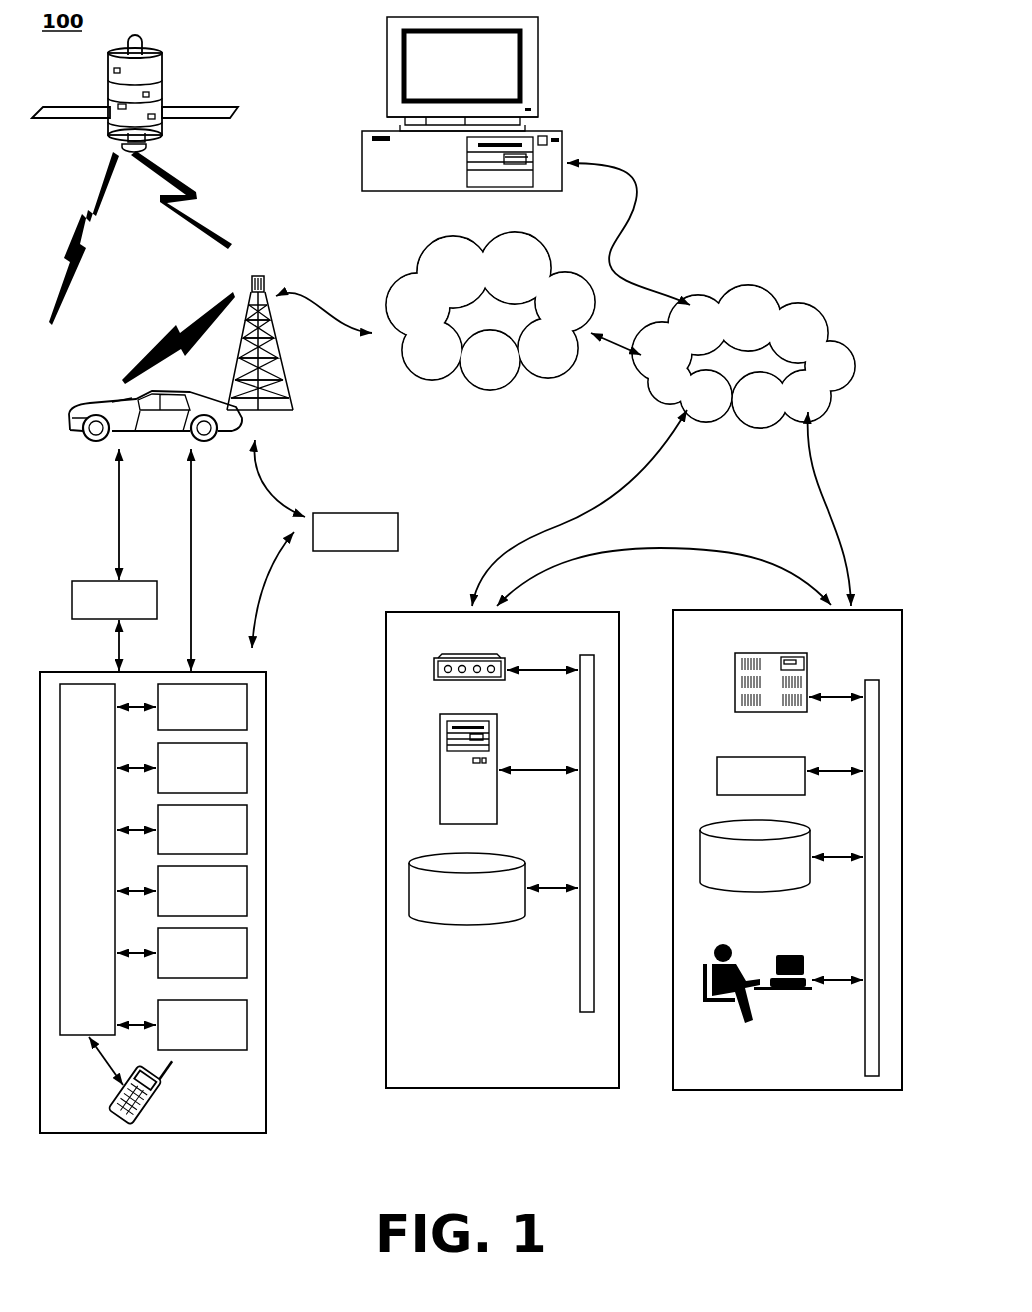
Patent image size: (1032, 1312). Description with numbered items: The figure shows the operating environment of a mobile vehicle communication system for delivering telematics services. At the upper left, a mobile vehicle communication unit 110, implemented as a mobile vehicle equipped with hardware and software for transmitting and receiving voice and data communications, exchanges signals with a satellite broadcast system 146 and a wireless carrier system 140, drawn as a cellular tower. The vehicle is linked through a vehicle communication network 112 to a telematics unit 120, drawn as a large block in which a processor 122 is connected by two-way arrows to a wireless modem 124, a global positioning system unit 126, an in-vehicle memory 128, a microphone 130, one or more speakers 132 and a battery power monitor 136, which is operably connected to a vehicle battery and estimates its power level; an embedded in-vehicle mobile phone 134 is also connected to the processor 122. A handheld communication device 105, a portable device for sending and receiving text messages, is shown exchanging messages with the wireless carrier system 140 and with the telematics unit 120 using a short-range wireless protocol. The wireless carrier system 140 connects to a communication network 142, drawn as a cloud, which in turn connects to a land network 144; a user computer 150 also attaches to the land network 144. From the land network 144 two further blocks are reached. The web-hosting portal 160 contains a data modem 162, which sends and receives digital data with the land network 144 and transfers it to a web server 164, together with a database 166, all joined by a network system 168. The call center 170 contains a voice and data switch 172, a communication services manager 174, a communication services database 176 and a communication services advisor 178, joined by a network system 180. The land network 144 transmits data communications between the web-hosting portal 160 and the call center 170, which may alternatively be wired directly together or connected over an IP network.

The handheld communication device 105 is at (376, 542).
The mobile vehicle communication unit 110 is at (100, 395).
The vehicle communication network 112 is at (135, 610).
The telematics unit 120 is at (128, 1150).
The processor 122 is at (106, 730).
The wireless modem 124 is at (222, 717).
The global positioning system unit 126 is at (222, 778).
The in-vehicle memory 128 is at (222, 840).
The microphone 130 is at (222, 901).
The speakers 132 is at (222, 963).
The in-vehicle mobile phone 134 is at (172, 1064).
The battery power monitor 136 is at (222, 1035).
The wireless carrier system 140 is at (292, 388).
The communication network 142 is at (496, 320).
The land network 144 is at (758, 377).
The satellite broadcast system 146 is at (157, 56).
The user computer 150 is at (479, 80).
The web-hosting portal 160 is at (478, 1103).
The data modem 162 is at (458, 654).
The web server 164 is at (488, 811).
The database 166 is at (486, 907).
The network system 168 is at (580, 1003).
The call center 170 is at (770, 1103).
The voice and data switch 172 is at (790, 653).
The communication services manager 174 is at (781, 790).
The communication services database 176 is at (775, 877).
The communication services advisor 178 is at (745, 968).
The network system 180 is at (865, 1028).